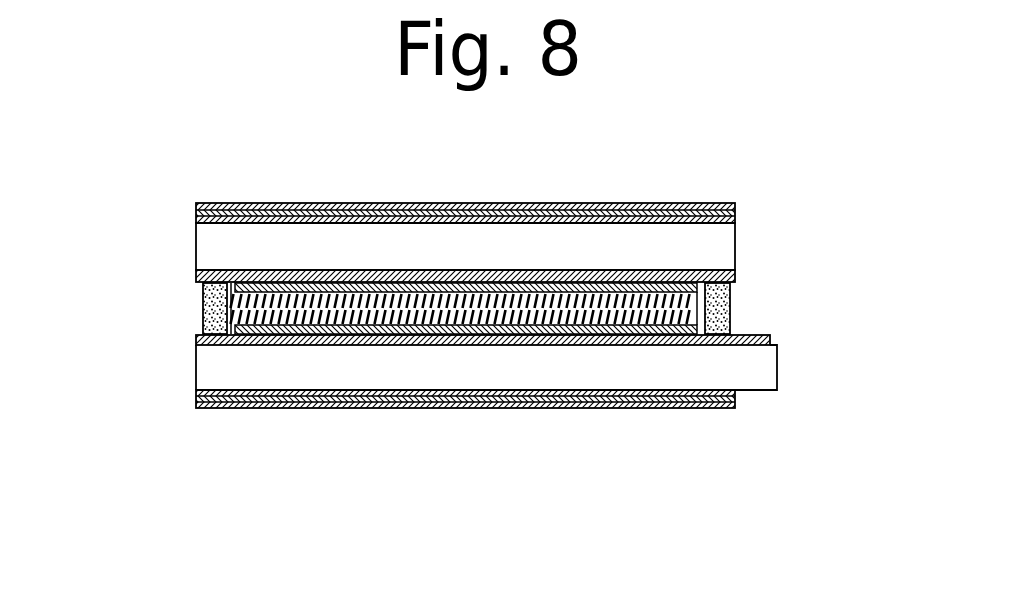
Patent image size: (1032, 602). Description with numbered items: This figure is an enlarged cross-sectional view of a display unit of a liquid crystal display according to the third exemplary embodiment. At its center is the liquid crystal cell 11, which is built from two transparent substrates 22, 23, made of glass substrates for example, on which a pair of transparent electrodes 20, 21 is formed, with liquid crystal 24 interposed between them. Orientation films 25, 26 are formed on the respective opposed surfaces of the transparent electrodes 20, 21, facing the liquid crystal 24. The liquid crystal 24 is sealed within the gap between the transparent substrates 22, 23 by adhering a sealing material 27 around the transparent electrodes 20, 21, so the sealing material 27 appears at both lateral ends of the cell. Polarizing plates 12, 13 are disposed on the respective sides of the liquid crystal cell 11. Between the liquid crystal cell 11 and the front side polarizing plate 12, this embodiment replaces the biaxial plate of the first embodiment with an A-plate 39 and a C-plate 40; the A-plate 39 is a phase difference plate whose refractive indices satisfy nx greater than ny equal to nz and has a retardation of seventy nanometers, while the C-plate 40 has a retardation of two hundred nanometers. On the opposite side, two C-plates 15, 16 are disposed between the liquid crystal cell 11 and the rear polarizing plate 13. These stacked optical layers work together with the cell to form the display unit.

The liquid crystal cell 11 is at (194, 306).
The polarizing plate 12 is at (700, 204).
The polarizing plate 13 is at (727, 408).
The C-plate 15 is at (545, 381).
The C-plate 16 is at (647, 398).
The transparent electrode 20 is at (373, 273).
The transparent electrode 21 is at (405, 337).
The transparent substrate 22 is at (717, 243).
The transparent substrate 23 is at (743, 371).
The liquid crystal 24 is at (694, 295).
The orientation film 25 is at (300, 280).
The orientation film 26 is at (293, 335).
The sealing material 27 is at (208, 318).
The A-plate 39 is at (605, 213).
The C-plate 40 is at (483, 232).